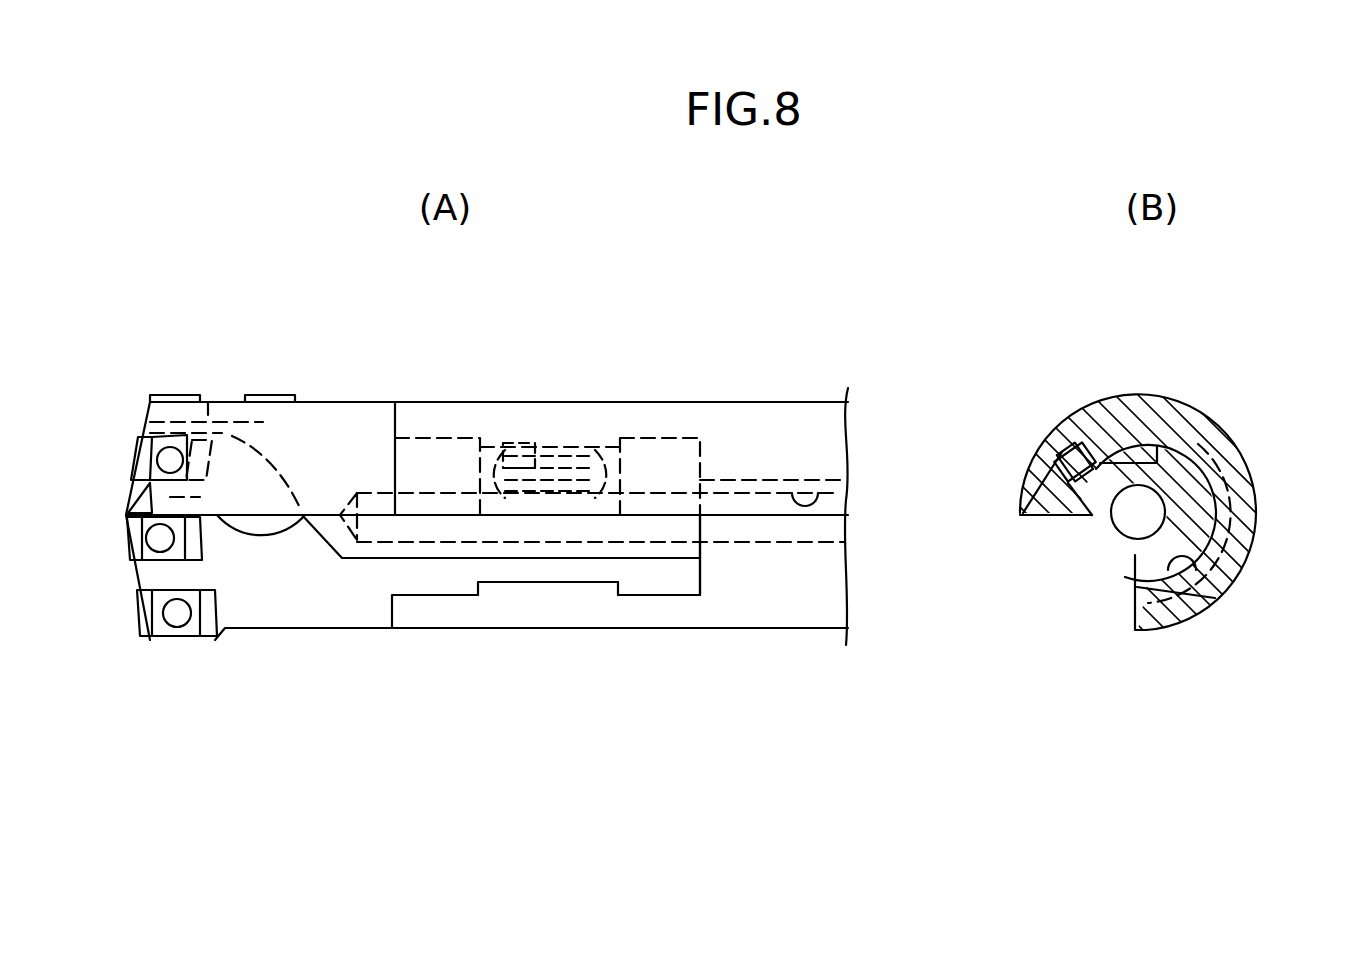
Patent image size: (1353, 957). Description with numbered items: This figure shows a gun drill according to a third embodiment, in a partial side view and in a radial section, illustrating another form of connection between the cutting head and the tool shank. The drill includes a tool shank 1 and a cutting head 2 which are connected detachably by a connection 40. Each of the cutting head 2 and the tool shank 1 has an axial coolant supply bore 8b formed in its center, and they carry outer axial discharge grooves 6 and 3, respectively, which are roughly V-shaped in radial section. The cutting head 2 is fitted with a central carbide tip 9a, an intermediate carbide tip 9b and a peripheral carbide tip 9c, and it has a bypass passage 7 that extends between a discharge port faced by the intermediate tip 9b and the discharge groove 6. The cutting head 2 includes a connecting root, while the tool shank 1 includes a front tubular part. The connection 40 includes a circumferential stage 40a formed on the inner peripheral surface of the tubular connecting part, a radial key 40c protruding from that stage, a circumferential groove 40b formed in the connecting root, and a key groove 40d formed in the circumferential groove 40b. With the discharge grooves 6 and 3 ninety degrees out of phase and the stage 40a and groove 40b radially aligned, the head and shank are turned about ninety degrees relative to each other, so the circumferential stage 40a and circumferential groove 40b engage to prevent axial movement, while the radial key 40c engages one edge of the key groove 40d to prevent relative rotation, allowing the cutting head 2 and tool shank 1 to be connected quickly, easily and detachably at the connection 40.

The tool shank 1 is at (790, 398).
The cutting head 2 is at (328, 400).
The discharge groove 3 is at (755, 610).
The discharge groove 6 is at (322, 588).
The bypass passage 7 is at (270, 528).
The axial coolant supply bore 8b is at (835, 492).
The central carbide tip 9a is at (125, 540).
The intermediate carbide tip 9b is at (132, 462).
The peripheral carbide tip 9c is at (138, 612).
The connection 40 is at (578, 392).
The circumferential stage 40a is at (540, 582).
The circumferential groove 40b is at (587, 584).
The radial key 40c is at (545, 440).
The key groove 40d is at (600, 450).